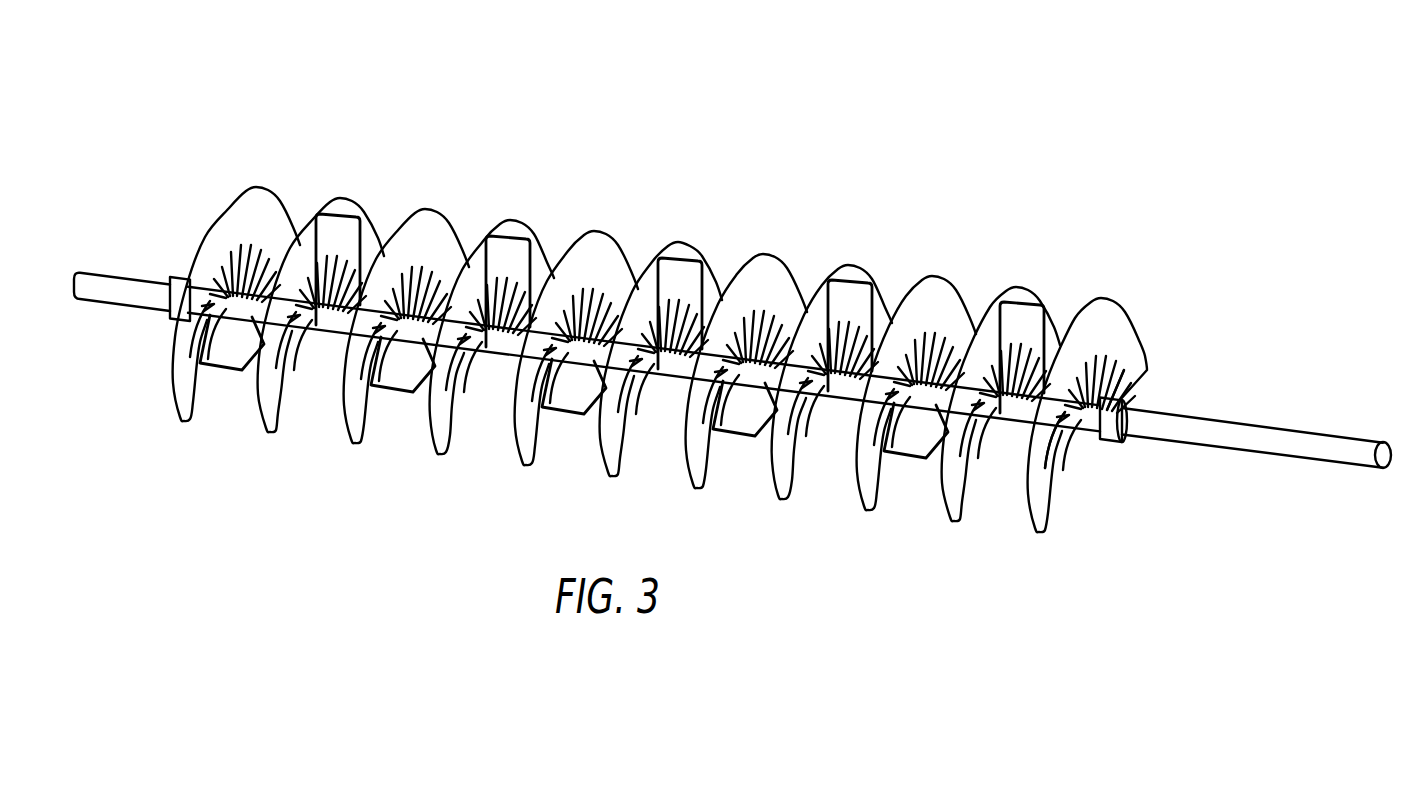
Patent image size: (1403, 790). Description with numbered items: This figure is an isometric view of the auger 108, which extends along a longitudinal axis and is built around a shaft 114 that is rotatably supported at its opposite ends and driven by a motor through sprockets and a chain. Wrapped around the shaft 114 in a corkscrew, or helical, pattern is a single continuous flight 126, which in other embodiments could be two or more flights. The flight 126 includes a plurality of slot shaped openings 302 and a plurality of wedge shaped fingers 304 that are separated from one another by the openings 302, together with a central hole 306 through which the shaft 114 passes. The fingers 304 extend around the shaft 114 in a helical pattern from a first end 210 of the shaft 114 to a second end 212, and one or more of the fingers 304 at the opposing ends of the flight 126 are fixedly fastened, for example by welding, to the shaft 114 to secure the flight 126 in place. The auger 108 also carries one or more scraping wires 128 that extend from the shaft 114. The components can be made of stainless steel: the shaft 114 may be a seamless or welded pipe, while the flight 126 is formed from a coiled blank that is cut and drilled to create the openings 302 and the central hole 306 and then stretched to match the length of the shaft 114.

The auger 108 is at (414, 155).
The shaft 114 is at (1277, 422).
The flight 126 is at (237, 203).
The scraping wires 128 is at (517, 238).
The first end of the shaft 210 is at (73, 285).
The second end of the shaft 212 is at (1388, 447).
The slot shaped openings 302 is at (1103, 367).
The wedge shaped fingers 304 is at (1113, 378).
The central hole 306 is at (1072, 403).